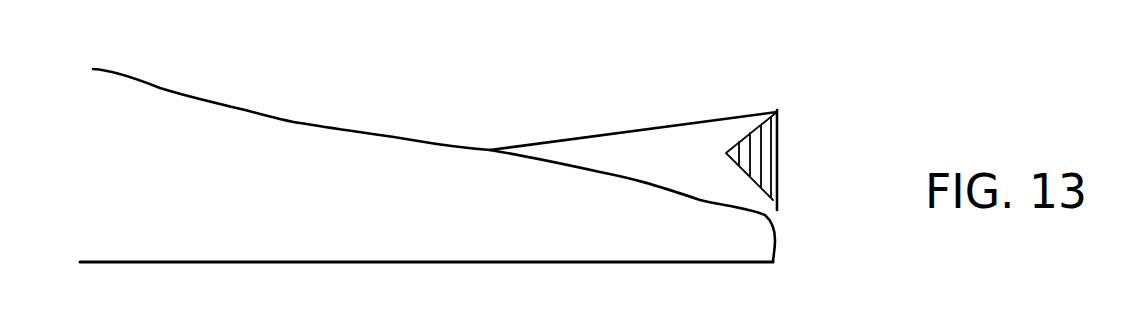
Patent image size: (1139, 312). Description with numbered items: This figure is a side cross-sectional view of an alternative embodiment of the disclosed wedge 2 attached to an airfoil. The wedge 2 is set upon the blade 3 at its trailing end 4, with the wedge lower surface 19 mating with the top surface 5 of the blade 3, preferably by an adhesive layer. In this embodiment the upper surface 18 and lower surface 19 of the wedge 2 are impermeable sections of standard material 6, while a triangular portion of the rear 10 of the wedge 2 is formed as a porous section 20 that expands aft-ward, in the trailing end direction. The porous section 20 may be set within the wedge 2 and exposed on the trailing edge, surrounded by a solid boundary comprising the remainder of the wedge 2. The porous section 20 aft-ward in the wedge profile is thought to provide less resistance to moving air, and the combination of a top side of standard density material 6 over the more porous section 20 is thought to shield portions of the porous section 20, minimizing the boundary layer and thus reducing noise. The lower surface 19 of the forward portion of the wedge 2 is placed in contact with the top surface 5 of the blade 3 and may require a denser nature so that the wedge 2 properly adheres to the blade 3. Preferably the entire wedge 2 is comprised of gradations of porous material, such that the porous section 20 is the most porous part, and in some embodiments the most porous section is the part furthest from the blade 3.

The wedge 2 is at (587, 146).
The blade 3 is at (425, 150).
The trailing end 4 is at (715, 256).
The top surface 5 is at (650, 182).
The standard material 6 is at (640, 148).
The rear of wedge 10 is at (800, 175).
The upper surface 18 is at (718, 116).
The lower surface 19 is at (738, 203).
The porous section 20 is at (778, 155).